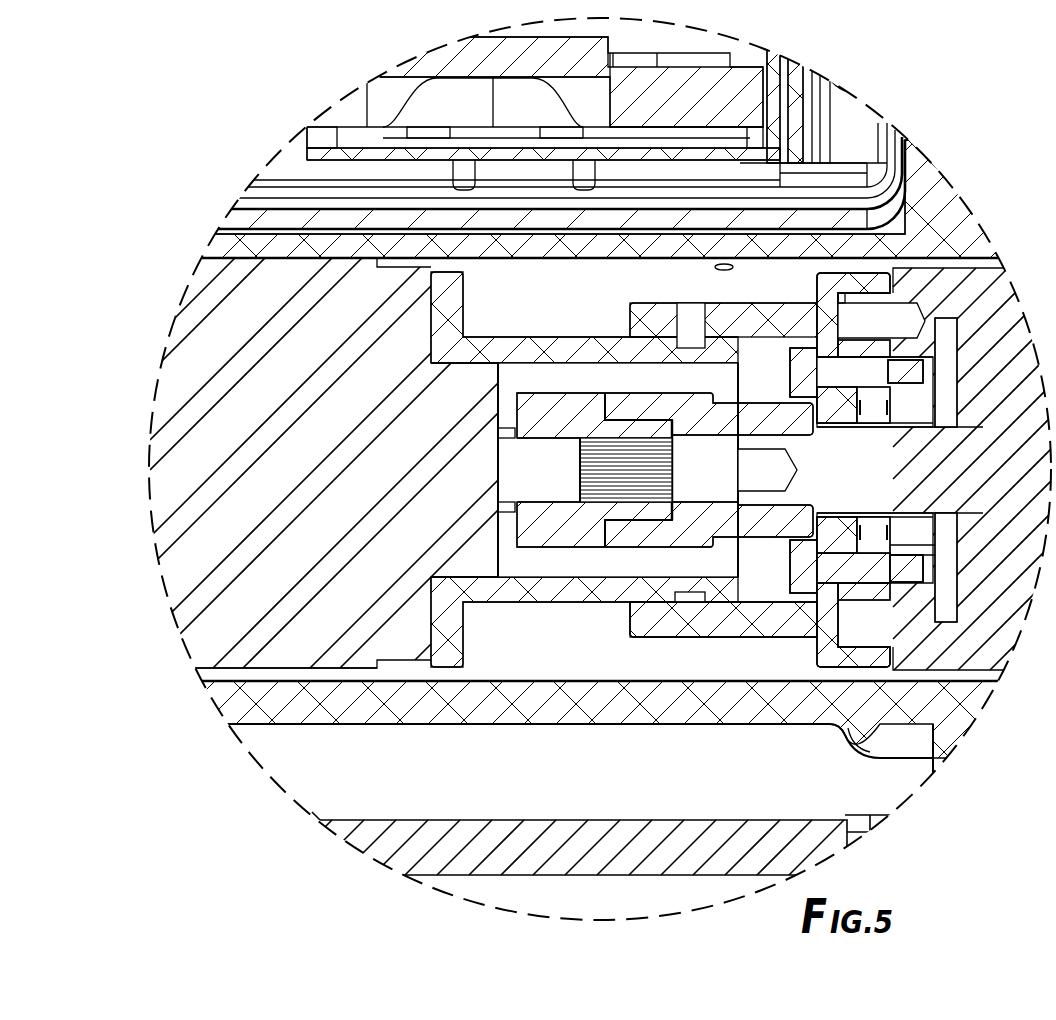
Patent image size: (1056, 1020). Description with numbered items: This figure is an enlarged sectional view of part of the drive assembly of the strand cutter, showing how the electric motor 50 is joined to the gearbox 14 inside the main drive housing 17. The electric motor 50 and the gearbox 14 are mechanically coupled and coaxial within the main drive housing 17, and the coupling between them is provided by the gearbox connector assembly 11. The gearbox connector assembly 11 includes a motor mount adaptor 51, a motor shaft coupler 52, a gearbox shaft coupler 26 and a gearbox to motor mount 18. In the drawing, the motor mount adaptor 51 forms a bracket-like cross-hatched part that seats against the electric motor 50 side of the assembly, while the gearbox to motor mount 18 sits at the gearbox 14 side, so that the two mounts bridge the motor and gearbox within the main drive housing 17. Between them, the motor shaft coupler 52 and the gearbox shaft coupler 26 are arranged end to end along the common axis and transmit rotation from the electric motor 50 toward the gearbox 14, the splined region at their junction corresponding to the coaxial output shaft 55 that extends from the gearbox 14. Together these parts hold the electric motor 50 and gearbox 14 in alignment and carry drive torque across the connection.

The gearbox connector assembly 11 is at (390, 396).
The gearbox 14 is at (972, 469).
The main drive housing 17 is at (425, 724).
The gearbox to motor mount 18 is at (715, 640).
The gearbox shaft coupler 26 is at (625, 548).
The electric motor 50 is at (263, 463).
The motor mount adaptor 51 is at (548, 337).
The motor shaft coupler 52 is at (532, 555).
The output shaft 55 is at (592, 470).